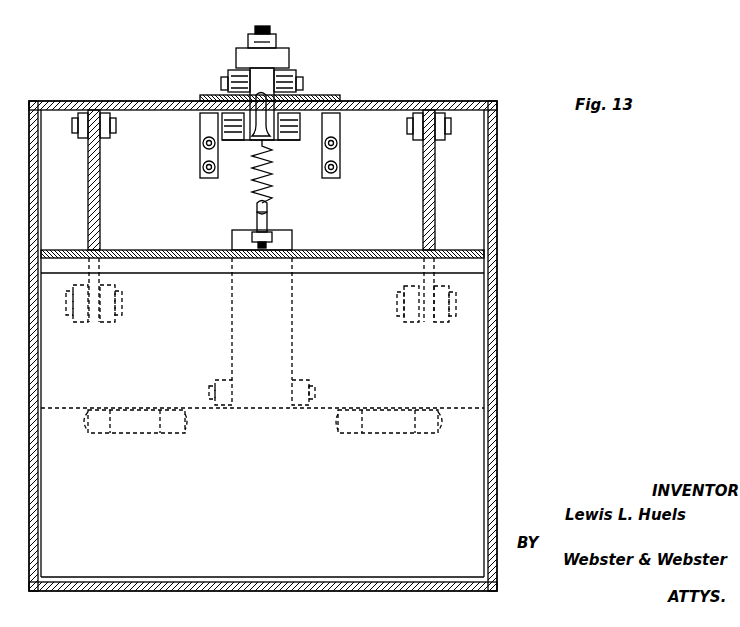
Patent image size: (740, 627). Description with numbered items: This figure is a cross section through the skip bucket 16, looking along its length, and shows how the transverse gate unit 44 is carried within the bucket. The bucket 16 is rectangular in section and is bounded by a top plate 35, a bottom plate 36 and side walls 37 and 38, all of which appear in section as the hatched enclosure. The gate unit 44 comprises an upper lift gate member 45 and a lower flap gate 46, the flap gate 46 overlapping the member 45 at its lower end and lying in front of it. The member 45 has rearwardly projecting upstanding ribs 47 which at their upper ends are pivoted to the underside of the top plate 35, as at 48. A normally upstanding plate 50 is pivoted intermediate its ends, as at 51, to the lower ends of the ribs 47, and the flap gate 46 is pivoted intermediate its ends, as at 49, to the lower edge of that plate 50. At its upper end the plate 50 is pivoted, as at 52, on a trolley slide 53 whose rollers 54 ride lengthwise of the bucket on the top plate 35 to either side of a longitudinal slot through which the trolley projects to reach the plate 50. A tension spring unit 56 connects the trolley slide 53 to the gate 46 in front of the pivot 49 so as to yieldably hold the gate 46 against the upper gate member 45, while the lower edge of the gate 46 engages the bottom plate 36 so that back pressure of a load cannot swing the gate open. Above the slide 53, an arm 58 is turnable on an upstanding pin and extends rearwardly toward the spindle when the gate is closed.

The skip bucket 16 is at (500, 322).
The top plate 35 is at (80, 100).
The bottom plate 36 is at (243, 586).
The side wall 37 is at (40, 486).
The side wall 38 is at (498, 385).
The gate unit 44 is at (494, 262).
The upper lift gate member 45 is at (320, 255).
The flap gate 46 is at (455, 482).
The ribs 47 is at (100, 196).
The pivot 48 is at (116, 128).
The pivot 49 is at (188, 426).
The upstanding plate 50 is at (358, 128).
The pivot 51 is at (122, 303).
The pivot 52 is at (210, 98).
The trolley slide 53 is at (264, 85).
The rollers 54 is at (229, 80).
The tension spring unit 56 is at (256, 188).
The arm 58 is at (278, 58).